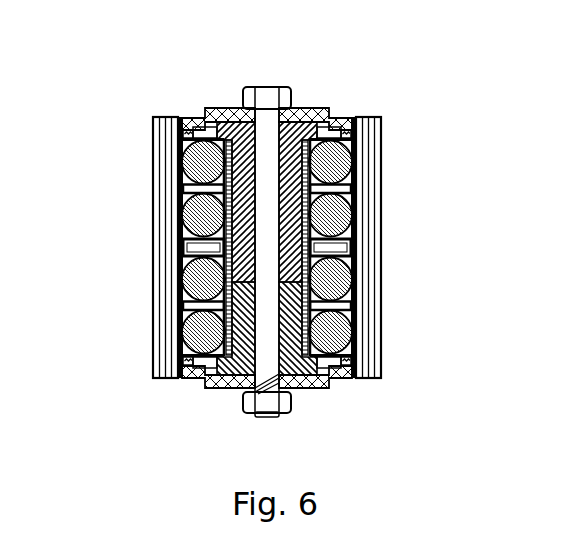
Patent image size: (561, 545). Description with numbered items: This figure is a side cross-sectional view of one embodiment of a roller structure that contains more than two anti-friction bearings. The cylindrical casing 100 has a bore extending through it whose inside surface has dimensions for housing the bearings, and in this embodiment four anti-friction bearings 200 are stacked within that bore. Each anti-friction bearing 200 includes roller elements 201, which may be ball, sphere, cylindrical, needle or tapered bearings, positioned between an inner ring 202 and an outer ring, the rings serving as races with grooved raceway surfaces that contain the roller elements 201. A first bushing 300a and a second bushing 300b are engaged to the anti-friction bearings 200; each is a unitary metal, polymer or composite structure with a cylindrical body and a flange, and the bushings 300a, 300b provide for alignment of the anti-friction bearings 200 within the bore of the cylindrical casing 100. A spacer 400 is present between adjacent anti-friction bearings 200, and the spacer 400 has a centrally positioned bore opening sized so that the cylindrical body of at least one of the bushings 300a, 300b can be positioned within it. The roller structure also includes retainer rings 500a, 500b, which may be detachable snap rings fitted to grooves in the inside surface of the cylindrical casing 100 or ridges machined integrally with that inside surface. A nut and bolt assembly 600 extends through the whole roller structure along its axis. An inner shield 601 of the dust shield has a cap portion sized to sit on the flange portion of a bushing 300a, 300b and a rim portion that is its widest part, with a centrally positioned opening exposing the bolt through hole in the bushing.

The cylindrical casing 100 is at (165, 130).
The anti-friction bearing 200 is at (355, 142).
The roller elements 201 is at (179, 145).
The inner ring 202 is at (183, 163).
The first bushing 300a is at (293, 245).
The second bushing 300b is at (293, 300).
The spacer 400 is at (183, 267).
The first retainer ring 500a is at (318, 121).
The second retainer ring 500b is at (180, 362).
The nut and bolt assembly 600 is at (267, 87).
The inner shield 601 is at (310, 382).